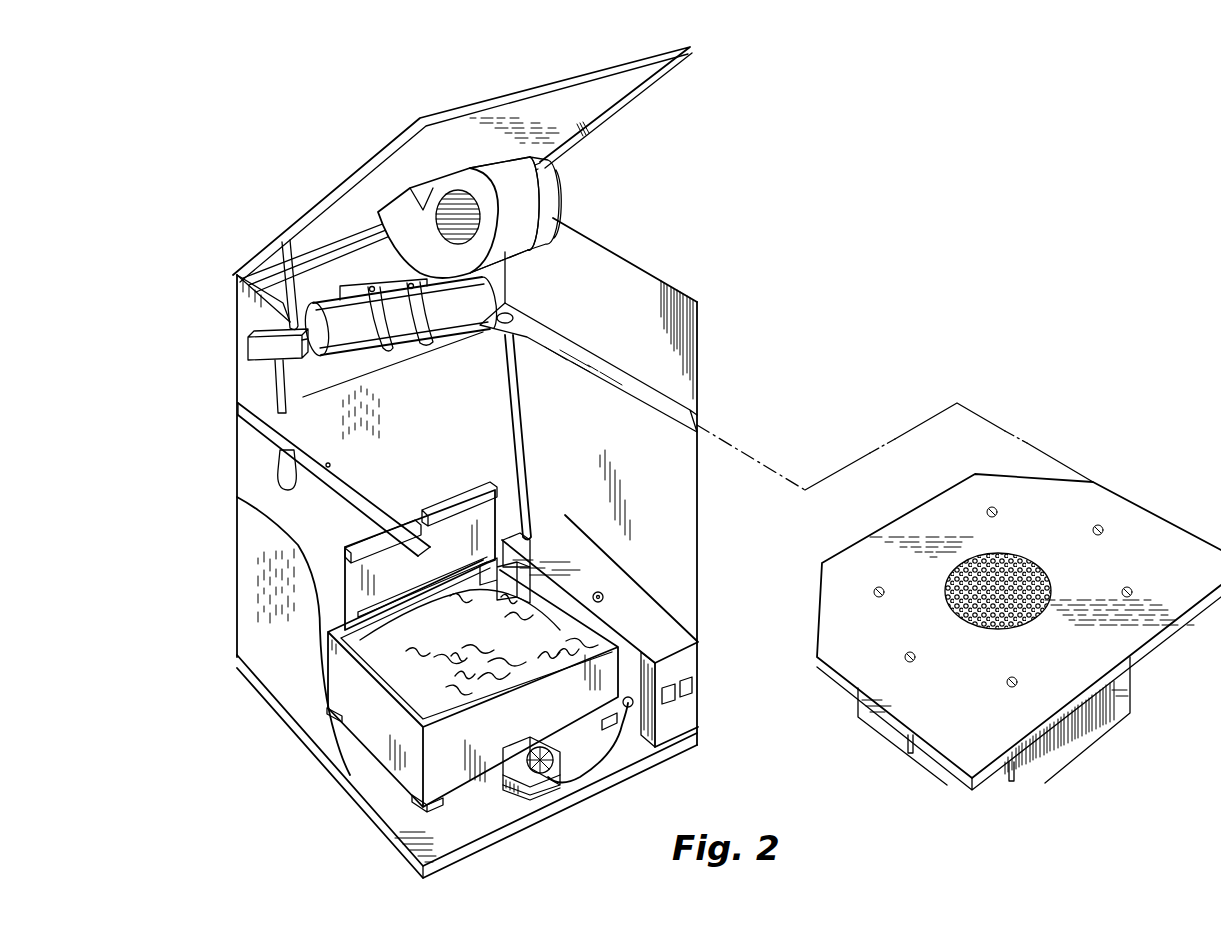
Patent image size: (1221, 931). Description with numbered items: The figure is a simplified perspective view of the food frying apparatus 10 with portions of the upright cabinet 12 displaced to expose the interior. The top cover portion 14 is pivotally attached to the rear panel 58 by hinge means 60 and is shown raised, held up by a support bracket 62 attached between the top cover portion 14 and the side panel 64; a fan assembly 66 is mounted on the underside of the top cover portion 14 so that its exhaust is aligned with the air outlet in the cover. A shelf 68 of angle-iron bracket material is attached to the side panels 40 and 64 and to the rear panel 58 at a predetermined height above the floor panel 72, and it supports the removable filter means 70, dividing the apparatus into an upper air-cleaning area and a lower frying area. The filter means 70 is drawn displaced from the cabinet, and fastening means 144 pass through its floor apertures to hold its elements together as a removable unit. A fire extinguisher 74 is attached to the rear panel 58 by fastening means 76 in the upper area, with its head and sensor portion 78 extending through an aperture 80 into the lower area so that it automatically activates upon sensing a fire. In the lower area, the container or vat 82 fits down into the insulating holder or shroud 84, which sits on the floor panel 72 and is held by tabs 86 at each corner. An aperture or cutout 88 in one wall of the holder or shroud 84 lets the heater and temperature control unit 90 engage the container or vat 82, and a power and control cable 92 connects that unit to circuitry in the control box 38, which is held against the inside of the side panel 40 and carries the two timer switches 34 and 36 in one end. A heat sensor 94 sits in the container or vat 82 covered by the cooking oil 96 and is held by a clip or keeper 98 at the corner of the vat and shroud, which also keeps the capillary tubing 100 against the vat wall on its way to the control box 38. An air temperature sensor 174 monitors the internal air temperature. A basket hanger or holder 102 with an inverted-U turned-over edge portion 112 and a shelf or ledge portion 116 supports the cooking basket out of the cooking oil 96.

The food frying apparatus 10 is at (731, 339).
The upright cabinet 12 is at (598, 219).
The top cover portion 14 is at (410, 152).
The timer switch 34 is at (674, 687).
The timer switch 36 is at (693, 687).
The control box 38 is at (655, 633).
The side panel 40 is at (678, 462).
The rear panel 58 is at (433, 438).
The hinge means 60 is at (330, 236).
The support bracket 62 is at (282, 250).
The side panel 64 is at (250, 306).
The fan assembly 66 is at (493, 172).
The shelf 68 is at (576, 352).
The removable filter means 70 is at (937, 507).
The floor panel 72 is at (490, 818).
The fire extinguisher 74 is at (452, 330).
The fastening means 76 is at (403, 348).
The head and sensor portion 78 is at (275, 478).
The aperture 80 is at (268, 402).
The container or vat 82 is at (410, 612).
The holder or shroud 84 is at (375, 737).
The tabs 86 is at (328, 710).
The aperture or cutout 88 is at (517, 748).
The heater and temperature control unit 90 is at (530, 778).
The power and control cable 92 is at (612, 757).
The heat sensor 94 is at (442, 646).
The cooking oil 96 is at (472, 700).
The clip or keeper 98 is at (524, 598).
The capillary tubing 100 is at (521, 603).
The basket hanger or holder 102 is at (318, 651).
The turned-over edge portion 112 is at (447, 508).
The shelf or ledge portion 116 is at (393, 602).
The fastening means 144 is at (906, 750).
The air temperature sensor 174 is at (604, 591).